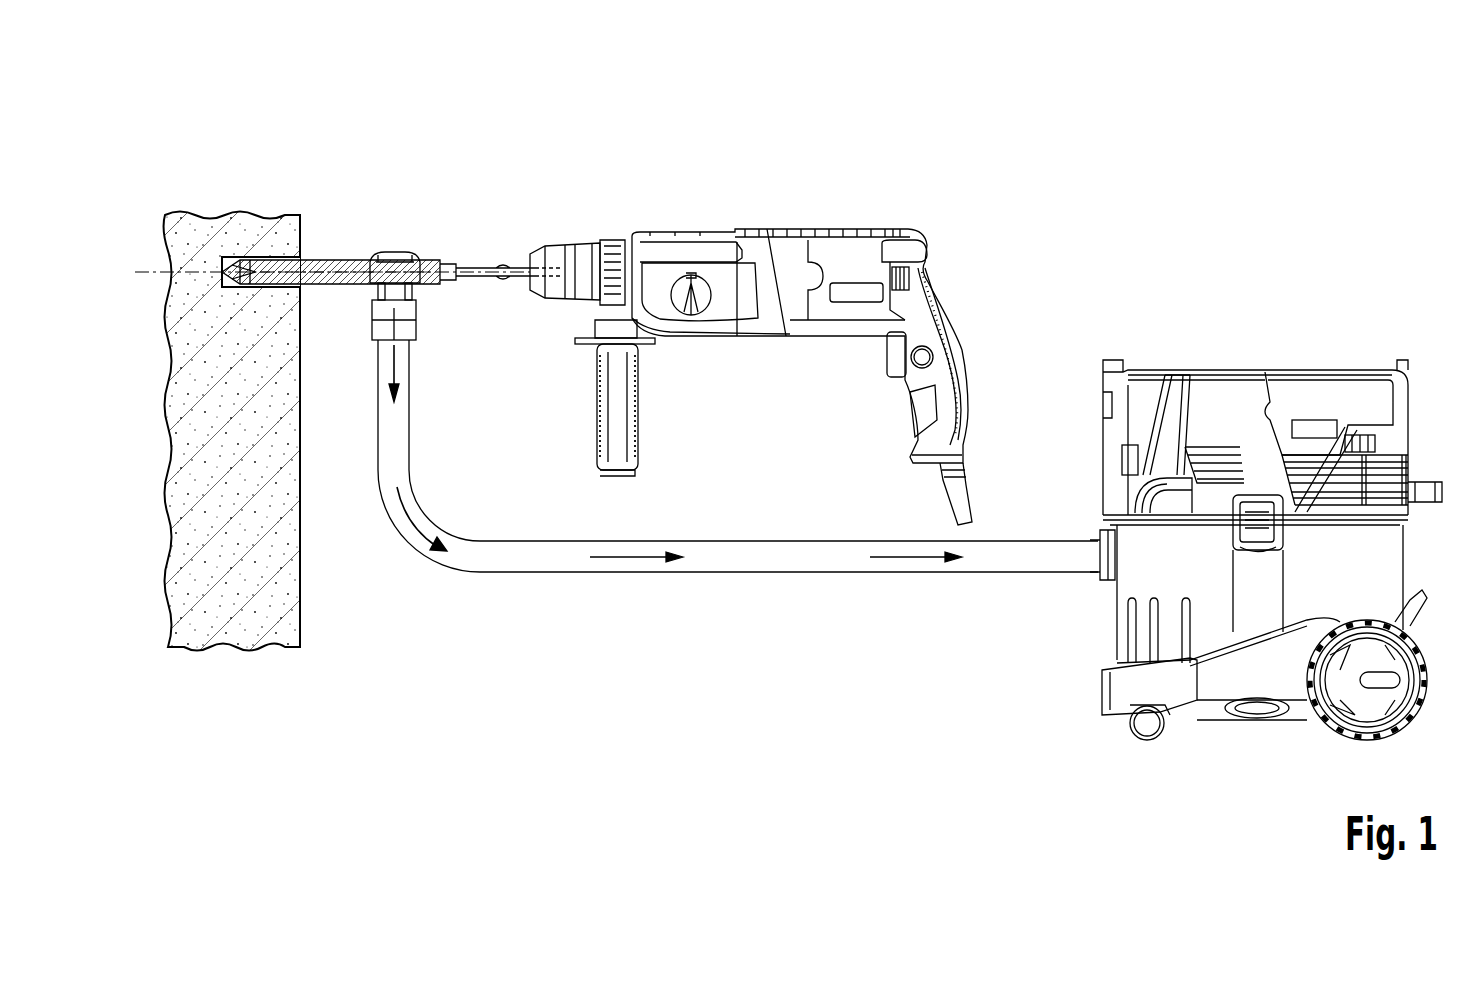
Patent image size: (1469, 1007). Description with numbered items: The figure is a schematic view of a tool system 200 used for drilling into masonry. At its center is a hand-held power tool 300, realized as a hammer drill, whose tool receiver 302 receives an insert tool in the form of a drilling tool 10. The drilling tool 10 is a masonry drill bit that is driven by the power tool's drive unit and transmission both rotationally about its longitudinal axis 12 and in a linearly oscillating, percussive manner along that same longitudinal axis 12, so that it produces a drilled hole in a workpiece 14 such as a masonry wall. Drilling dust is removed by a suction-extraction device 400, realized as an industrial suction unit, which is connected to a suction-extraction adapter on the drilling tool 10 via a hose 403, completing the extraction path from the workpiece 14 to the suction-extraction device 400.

The drilling tool 10 is at (338, 259).
The longitudinal axis 12 is at (151, 270).
The workpiece 14 is at (236, 214).
The tool system 200 is at (853, 131).
The hand-held power tool 300 is at (780, 232).
The tool receiver 302 is at (549, 241).
The suction-extraction device 400 is at (1245, 361).
The hose 403 is at (752, 573).